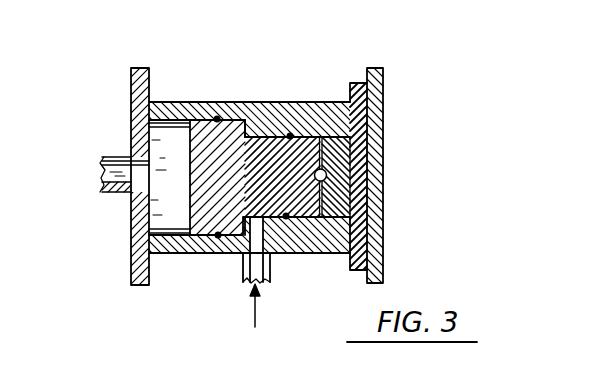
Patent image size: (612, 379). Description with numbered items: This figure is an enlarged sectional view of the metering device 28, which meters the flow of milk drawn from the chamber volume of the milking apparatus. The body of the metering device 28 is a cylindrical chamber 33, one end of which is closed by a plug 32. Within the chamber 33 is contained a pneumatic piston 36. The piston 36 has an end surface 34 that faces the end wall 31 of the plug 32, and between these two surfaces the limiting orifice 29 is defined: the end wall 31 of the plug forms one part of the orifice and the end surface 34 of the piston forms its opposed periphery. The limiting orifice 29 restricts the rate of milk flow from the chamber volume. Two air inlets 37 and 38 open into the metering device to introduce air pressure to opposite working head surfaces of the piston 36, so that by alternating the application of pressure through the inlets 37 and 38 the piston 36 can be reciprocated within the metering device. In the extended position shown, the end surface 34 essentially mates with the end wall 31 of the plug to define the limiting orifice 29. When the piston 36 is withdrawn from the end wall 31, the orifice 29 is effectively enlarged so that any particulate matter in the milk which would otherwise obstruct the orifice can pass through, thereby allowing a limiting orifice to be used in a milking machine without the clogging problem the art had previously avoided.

The metering device 28 is at (287, 78).
The limiting orifice 29 is at (327, 174).
The end wall of plug 31 is at (306, 232).
The plug 32 is at (371, 242).
The cylindrical chamber 33 is at (240, 102).
The end surface of piston 34 is at (292, 195).
The pneumatic piston 36 is at (232, 186).
The air inlet 37 is at (112, 180).
The air inlet 38 is at (271, 272).